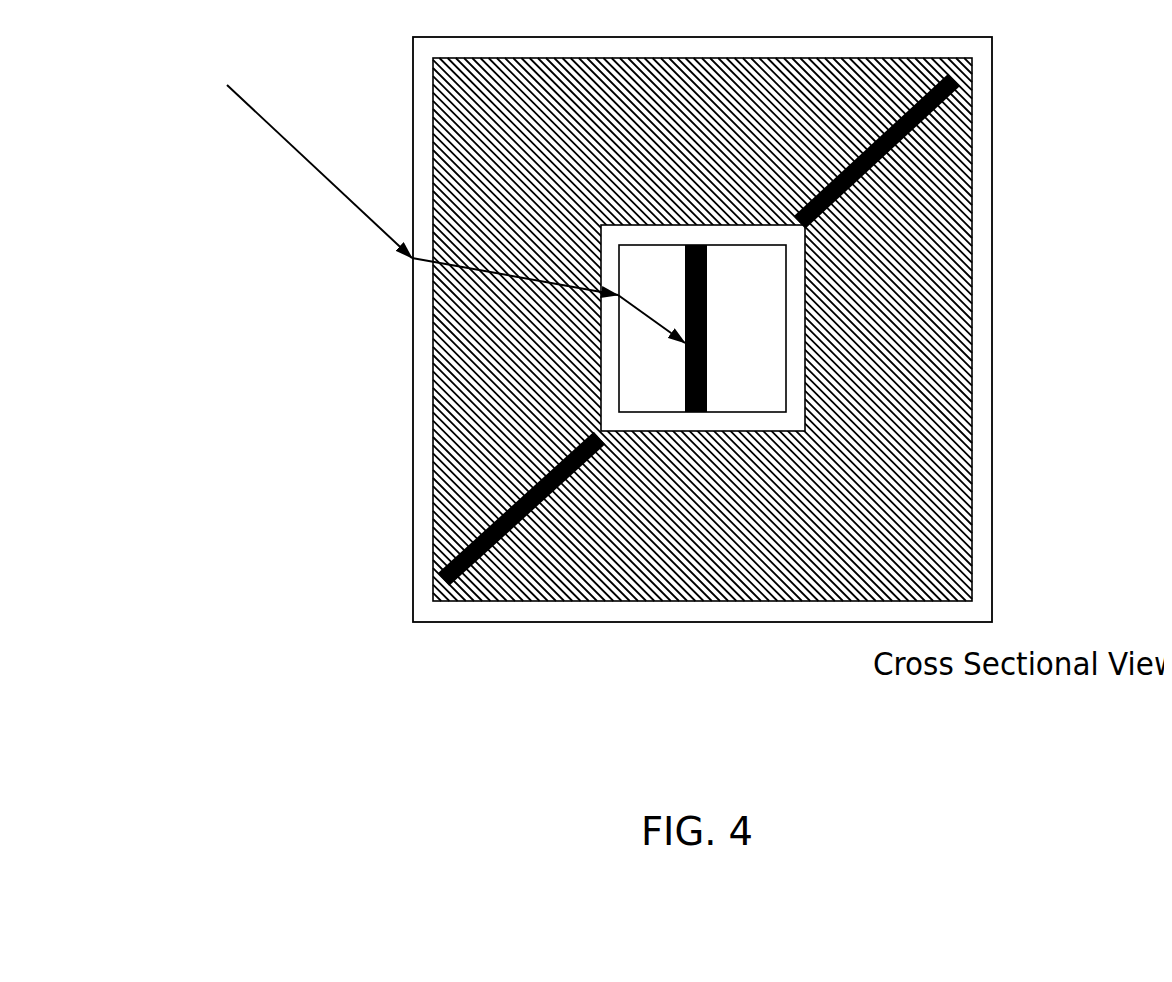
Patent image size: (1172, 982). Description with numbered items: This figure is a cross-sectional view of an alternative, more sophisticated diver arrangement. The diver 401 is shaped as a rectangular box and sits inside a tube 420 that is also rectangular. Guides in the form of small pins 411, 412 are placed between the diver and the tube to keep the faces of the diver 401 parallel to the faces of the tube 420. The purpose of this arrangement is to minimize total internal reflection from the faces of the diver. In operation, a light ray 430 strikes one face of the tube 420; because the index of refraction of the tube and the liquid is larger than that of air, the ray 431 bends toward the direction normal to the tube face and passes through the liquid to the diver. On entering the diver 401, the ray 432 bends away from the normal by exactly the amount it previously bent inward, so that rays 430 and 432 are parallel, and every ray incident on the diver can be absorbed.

The diver 401 is at (800, 317).
The pin 411 is at (912, 126).
The pin 412 is at (486, 557).
The tube 420 is at (987, 543).
The light ray 430 is at (304, 171).
The ray 431 is at (515, 288).
The ray 432 is at (651, 315).